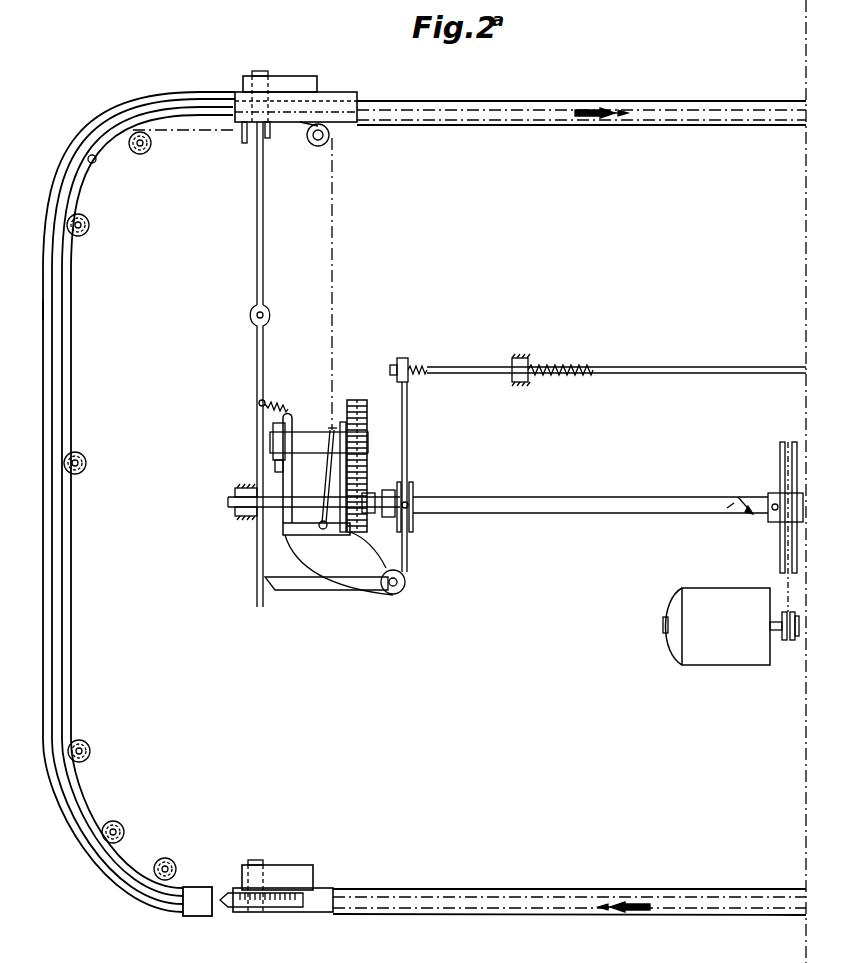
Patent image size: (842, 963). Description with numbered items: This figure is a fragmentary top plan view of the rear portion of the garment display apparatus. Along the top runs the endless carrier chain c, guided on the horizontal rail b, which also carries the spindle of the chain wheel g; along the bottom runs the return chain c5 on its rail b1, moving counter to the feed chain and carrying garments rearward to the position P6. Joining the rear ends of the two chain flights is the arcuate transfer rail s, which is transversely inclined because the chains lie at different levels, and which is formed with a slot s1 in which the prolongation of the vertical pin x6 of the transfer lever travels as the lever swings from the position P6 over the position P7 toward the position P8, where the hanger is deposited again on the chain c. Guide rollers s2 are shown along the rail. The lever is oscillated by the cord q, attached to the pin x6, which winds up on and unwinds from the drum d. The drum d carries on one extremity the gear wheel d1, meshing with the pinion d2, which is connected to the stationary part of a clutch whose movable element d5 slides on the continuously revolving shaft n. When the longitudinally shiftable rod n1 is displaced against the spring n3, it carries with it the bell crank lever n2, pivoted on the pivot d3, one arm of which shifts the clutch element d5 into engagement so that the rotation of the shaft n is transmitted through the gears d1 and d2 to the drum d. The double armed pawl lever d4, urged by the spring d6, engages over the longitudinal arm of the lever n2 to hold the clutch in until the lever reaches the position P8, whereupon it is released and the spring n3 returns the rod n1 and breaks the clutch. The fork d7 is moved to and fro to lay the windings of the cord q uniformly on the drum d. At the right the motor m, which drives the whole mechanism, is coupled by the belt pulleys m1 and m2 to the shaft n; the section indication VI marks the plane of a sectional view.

The transfer end position P8 is at (242, 66).
The return chain delivery position P6 is at (207, 959).
The intermediate transfer position P7 is at (125, 318).
The horizontal rail b is at (450, 103).
The return chain rail b1 is at (467, 915).
The endless carrier chain c is at (398, 109).
The return chain c5 is at (370, 896).
The vertical pin x6 is at (97, 161).
The arcuate transfer rail s is at (113, 877).
The slot s1 is at (78, 824).
The guide rollers s2 is at (84, 219).
The winding drum d is at (297, 442).
The gear wheel d1 is at (356, 400).
The pinion d2 is at (392, 520).
The pivot d3 is at (406, 580).
The double armed pawl lever d4 is at (262, 222).
The movable clutch element d5 is at (415, 496).
The spring d6 is at (266, 400).
The fork d7 is at (326, 462).
The cord q is at (334, 236).
The continuously revolving shaft n is at (510, 500).
The longitudinally shiftable rod n1 is at (648, 371).
The bell crank lever n2 is at (409, 452).
The spring n3 is at (536, 364).
The motor m is at (722, 626).
The motor pulley m1 is at (795, 641).
The driven pulley m2 is at (780, 445).
The chain wheel g is at (241, 912).
The section line VI is at (236, 487).